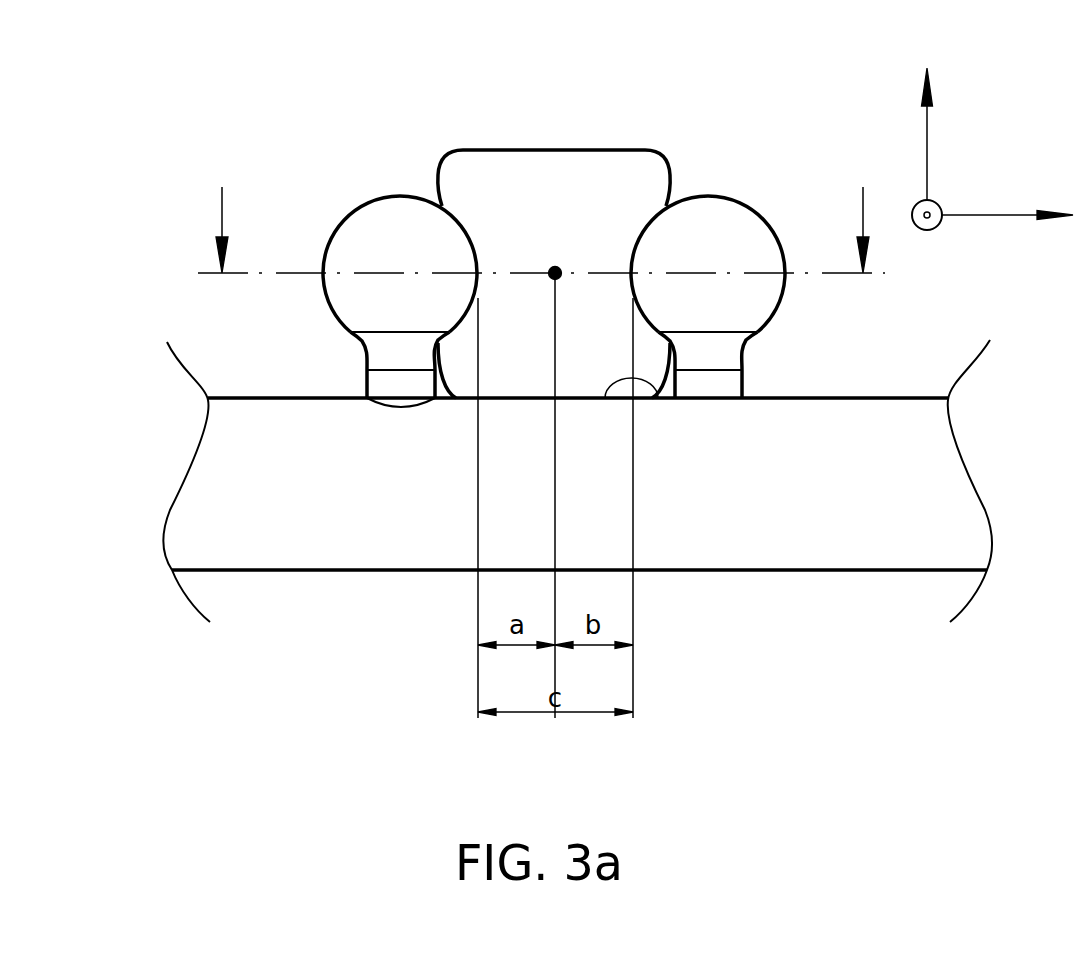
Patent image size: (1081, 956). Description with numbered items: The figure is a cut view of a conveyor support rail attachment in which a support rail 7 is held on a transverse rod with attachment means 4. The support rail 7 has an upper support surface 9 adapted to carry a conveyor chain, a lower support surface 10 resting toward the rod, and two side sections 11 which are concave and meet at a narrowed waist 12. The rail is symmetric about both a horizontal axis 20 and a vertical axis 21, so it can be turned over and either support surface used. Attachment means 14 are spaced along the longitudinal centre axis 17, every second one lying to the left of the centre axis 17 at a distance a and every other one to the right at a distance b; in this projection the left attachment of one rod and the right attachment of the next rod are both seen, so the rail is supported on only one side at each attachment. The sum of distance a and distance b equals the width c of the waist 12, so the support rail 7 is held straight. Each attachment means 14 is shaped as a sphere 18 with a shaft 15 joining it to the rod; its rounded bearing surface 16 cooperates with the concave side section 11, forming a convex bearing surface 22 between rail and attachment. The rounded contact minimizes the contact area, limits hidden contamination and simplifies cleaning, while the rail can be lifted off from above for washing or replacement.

The transverse rod with attachment means 4 is at (293, 438).
The support rail 7 is at (517, 353).
The upper support surface 9 is at (583, 150).
The lower support surface 10 is at (617, 397).
The side section 11 is at (428, 162).
The waist 12 is at (597, 220).
The attachment means 14 is at (375, 241).
The shaft 15 is at (727, 388).
The bearing surface of attachment means 16 is at (637, 250).
The centre axis 17 is at (548, 273).
The sphere 18 is at (782, 213).
The horizontal axis 20 is at (1007, 198).
The vertical axis 21 is at (947, 134).
The convex bearing surface 22 is at (642, 397).